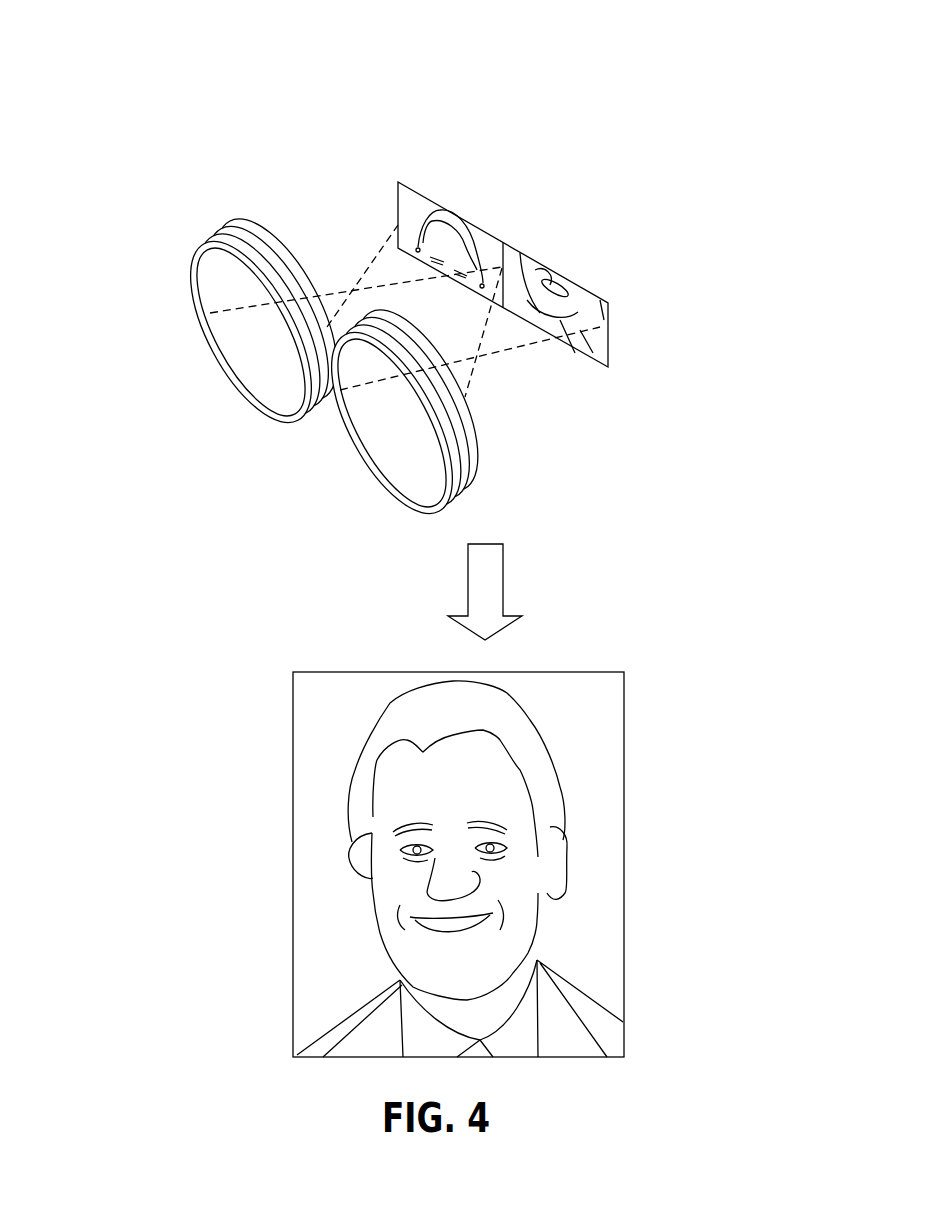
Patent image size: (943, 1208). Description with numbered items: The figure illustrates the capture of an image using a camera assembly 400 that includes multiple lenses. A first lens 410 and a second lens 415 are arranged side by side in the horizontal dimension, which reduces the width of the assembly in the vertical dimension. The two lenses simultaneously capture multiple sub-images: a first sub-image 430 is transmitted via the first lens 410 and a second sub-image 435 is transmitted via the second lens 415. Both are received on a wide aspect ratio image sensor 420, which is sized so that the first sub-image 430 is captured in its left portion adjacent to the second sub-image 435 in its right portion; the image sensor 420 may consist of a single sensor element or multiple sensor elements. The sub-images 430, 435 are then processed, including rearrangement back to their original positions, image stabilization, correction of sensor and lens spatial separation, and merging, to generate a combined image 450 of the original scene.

The camera assembly 400 is at (173, 123).
The first lens 410 is at (188, 248).
The second lens 415 is at (480, 460).
The wide aspect ratio image sensor 420 is at (500, 227).
The first sub-image 430 is at (393, 183).
The second sub-image 435 is at (617, 348).
The combined image 450 is at (250, 672).